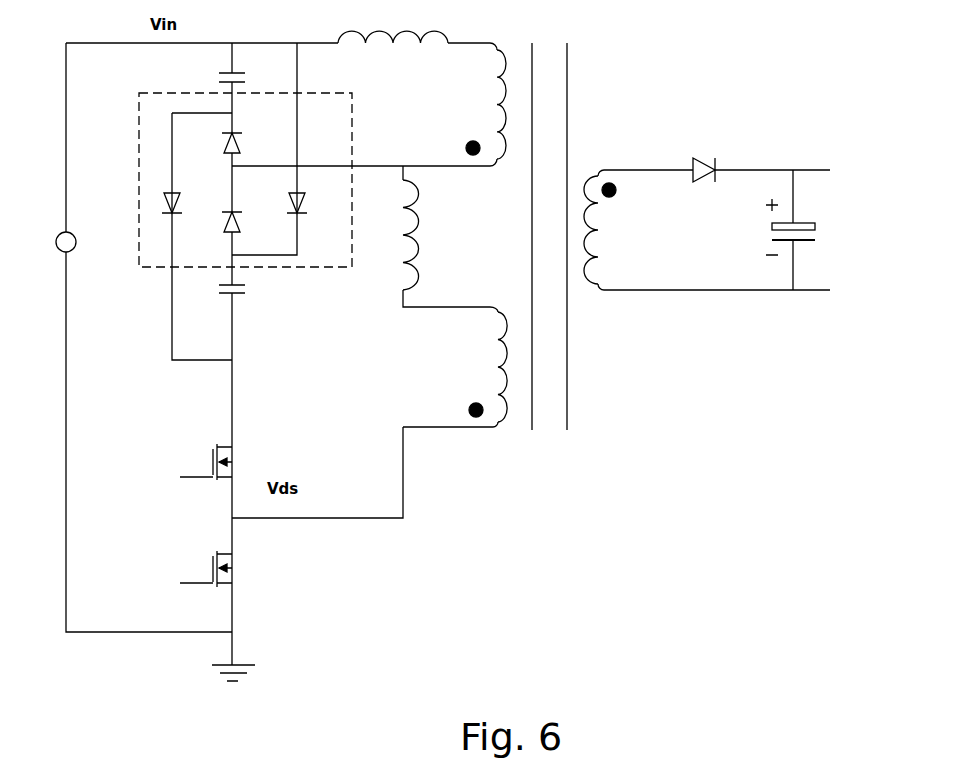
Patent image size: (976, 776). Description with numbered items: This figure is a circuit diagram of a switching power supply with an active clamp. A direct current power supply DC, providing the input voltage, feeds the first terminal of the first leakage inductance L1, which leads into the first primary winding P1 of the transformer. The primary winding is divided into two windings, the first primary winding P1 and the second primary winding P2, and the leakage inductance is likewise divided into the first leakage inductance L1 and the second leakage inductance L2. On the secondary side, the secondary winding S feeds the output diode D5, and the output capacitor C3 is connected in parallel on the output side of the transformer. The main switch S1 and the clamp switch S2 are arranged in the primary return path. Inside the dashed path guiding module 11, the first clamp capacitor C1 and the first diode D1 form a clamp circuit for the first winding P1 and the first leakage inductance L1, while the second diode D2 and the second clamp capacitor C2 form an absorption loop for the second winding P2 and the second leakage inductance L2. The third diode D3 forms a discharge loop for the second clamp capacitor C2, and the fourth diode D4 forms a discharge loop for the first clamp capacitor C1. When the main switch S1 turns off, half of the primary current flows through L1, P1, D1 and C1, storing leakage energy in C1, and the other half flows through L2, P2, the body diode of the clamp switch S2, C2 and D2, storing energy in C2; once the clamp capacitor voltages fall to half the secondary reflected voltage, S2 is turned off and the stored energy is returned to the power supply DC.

The path guiding module 11 is at (310, 270).
The direct current power supply DC is at (83, 243).
The first clamp capacitor C1 is at (246, 78).
The second clamp capacitor C2 is at (246, 291).
The output capacitor C3 is at (775, 230).
The first diode D1 is at (248, 144).
The second diode D2 is at (247, 218).
The third diode D3 is at (312, 204).
The fourth diode D4 is at (188, 204).
The output diode D5 is at (704, 152).
The first leakage inductance L1 is at (393, 55).
The second leakage inductance L2 is at (429, 228).
The first primary winding P1 is at (478, 104).
The second primary winding P2 is at (455, 367).
The secondary winding S is at (606, 230).
The main switch S1 is at (191, 569).
The clamp switch S2 is at (191, 454).